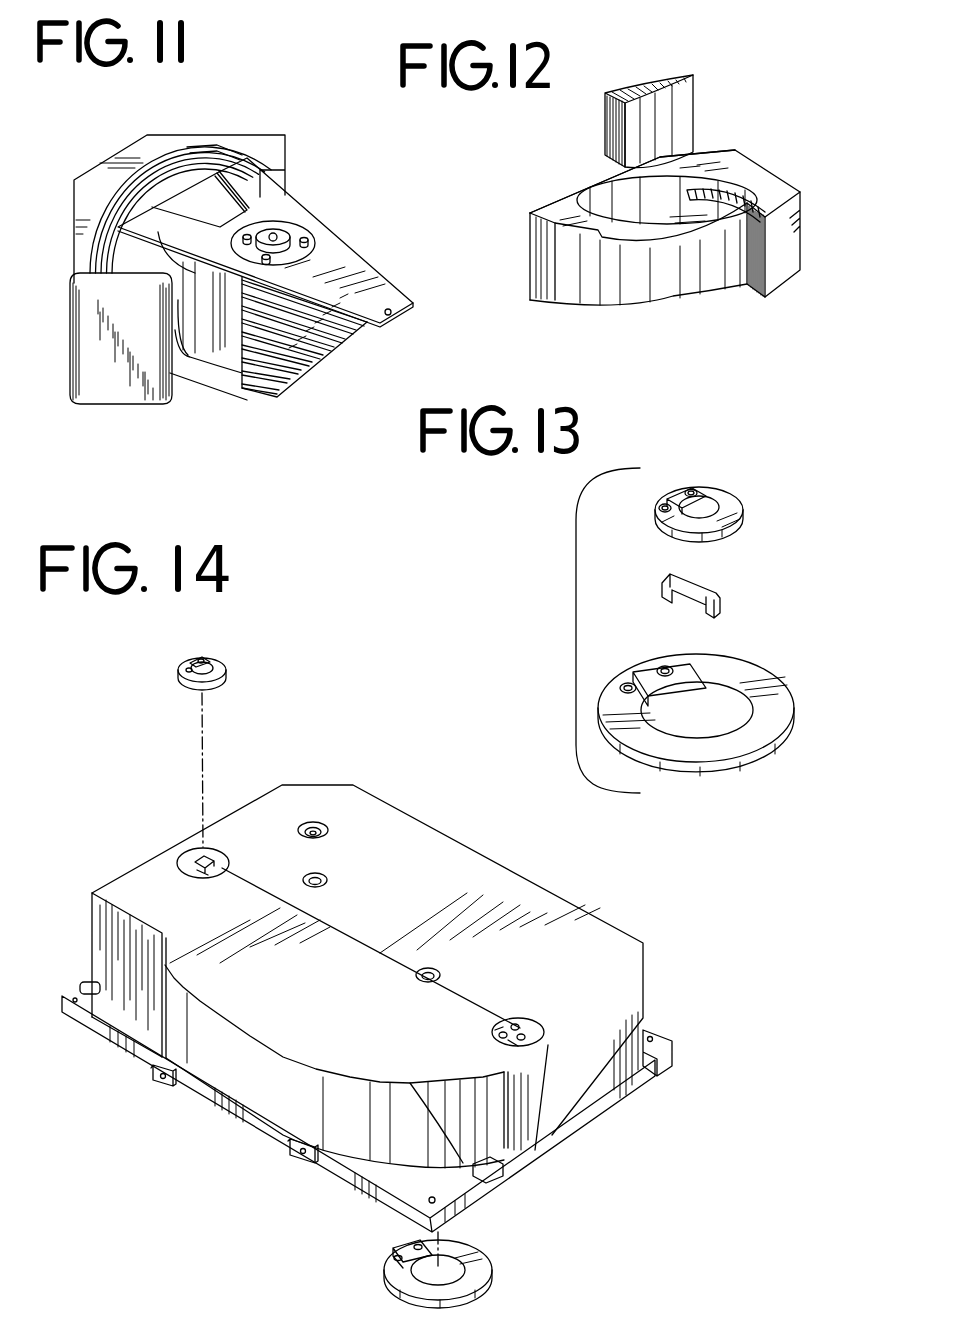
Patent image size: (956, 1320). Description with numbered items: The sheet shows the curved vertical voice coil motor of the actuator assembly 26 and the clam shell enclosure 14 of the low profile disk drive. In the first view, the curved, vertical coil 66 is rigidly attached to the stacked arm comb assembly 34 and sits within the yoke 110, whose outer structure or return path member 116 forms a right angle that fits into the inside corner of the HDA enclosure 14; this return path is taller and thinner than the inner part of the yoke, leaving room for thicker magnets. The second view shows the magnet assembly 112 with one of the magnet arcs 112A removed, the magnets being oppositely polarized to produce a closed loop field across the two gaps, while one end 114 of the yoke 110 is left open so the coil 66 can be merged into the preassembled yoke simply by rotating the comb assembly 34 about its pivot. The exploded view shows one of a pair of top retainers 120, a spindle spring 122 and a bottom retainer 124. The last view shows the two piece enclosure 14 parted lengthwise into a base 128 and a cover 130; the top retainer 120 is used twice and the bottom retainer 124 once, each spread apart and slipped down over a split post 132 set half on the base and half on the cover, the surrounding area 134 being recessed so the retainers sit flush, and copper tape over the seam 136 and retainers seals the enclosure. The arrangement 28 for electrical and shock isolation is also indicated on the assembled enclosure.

In FIG. 14, the head/disk assembly (HDA) enclosure 14 is at (595, 878).
In FIG. 11, the actuator assembly 26 is at (218, 425).
In FIG. 14, the arrangement for electrical and shock isolation 28 is at (165, 1091).
In FIG. 11, the stacked arm comb assembly 34 is at (304, 217).
In FIG. 11, the curved vertical coil 66 is at (183, 147).
In FIG. 11, the yoke 110 is at (230, 130).
In FIG. 12, the yoke 110 is at (743, 165).
In FIG. 12, the magnet assembly 112 is at (560, 182).
In FIG. 12, the magnet arcs 112A is at (675, 128).
In FIG. 12, the open end of yoke 114 is at (782, 265).
In FIG. 11, the outer structure (return path member) 116 is at (85, 185).
In FIG. 13, the top retainer 120 is at (730, 503).
In FIG. 14, the top retainer 120 is at (227, 670).
In FIG. 13, the spindle spring 122 is at (720, 592).
In FIG. 13, the bottom retainer 124 is at (775, 712).
In FIG. 14, the bottom retainer 124 is at (387, 1268).
In FIG. 14, the base 128 is at (477, 851).
In FIG. 14, the cover 130 is at (488, 1170).
In FIG. 14, the split post 132 is at (197, 860).
In FIG. 14, the recessed area 134 is at (227, 850).
In FIG. 14, the seam 136 is at (357, 943).